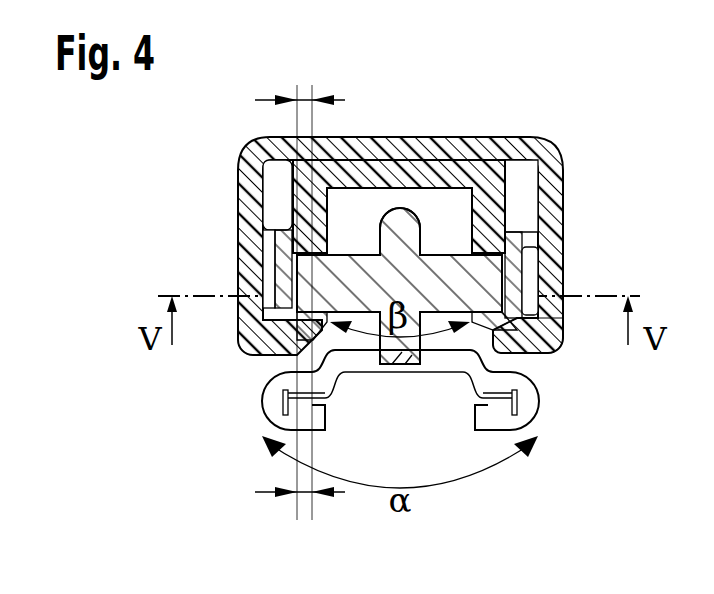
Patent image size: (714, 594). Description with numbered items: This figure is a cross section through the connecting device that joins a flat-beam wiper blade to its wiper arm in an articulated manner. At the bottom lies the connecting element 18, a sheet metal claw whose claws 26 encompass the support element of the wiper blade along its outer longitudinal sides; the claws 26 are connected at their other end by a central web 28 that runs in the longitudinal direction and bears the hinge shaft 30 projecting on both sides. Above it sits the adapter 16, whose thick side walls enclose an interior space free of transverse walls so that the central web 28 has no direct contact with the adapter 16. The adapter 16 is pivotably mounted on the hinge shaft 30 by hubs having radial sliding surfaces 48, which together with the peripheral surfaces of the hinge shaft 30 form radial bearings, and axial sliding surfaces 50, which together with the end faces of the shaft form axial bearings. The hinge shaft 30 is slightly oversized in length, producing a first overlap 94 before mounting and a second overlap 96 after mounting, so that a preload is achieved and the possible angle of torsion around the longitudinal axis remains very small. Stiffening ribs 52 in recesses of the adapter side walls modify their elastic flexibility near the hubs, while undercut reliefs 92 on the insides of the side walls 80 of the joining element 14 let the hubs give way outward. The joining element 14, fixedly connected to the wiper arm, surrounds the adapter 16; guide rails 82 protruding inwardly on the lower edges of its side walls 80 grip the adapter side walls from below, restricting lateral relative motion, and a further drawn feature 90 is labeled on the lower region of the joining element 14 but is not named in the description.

The joining element 14 is at (525, 153).
The adapter 16 is at (457, 172).
The connecting element 18 is at (407, 366).
The claws 26 is at (276, 401).
The central web 28 is at (400, 212).
The hinge shaft 30 is at (331, 283).
The radial sliding surfaces 48 is at (503, 281).
The axial sliding surfaces 50 is at (272, 283).
The stiffening ribs 52 is at (470, 283).
The side walls of the joining element 80 is at (266, 213).
The guide rails 82 is at (548, 346).
The chamfer 90 is at (535, 360).
The undercut reliefs 92 is at (530, 240).
The first overlap 94 is at (304, 496).
The second overlap 96 is at (303, 98).